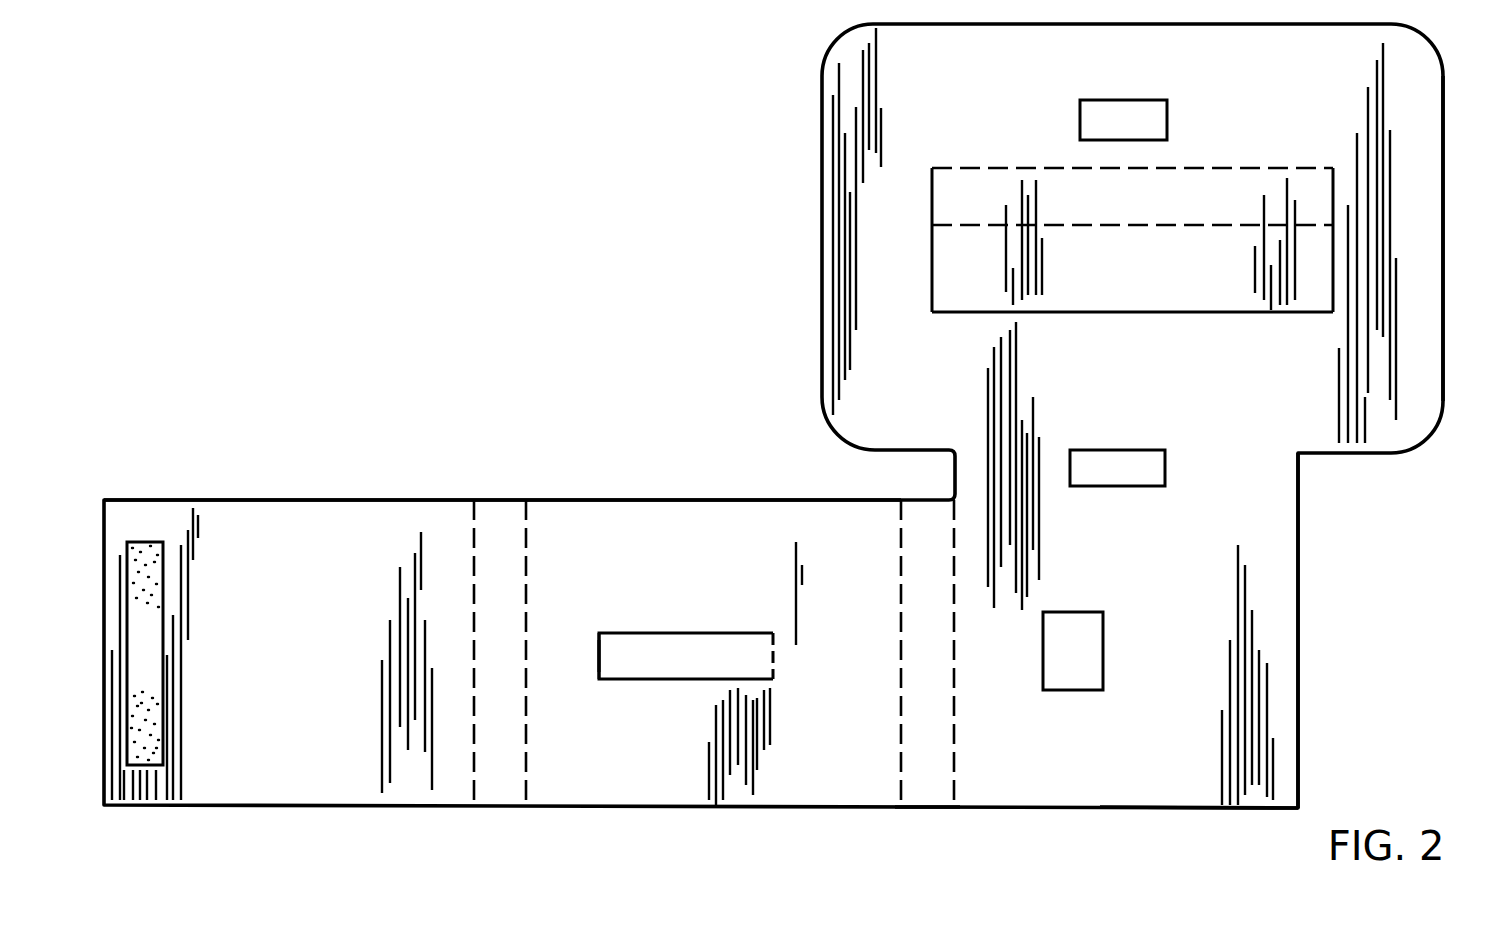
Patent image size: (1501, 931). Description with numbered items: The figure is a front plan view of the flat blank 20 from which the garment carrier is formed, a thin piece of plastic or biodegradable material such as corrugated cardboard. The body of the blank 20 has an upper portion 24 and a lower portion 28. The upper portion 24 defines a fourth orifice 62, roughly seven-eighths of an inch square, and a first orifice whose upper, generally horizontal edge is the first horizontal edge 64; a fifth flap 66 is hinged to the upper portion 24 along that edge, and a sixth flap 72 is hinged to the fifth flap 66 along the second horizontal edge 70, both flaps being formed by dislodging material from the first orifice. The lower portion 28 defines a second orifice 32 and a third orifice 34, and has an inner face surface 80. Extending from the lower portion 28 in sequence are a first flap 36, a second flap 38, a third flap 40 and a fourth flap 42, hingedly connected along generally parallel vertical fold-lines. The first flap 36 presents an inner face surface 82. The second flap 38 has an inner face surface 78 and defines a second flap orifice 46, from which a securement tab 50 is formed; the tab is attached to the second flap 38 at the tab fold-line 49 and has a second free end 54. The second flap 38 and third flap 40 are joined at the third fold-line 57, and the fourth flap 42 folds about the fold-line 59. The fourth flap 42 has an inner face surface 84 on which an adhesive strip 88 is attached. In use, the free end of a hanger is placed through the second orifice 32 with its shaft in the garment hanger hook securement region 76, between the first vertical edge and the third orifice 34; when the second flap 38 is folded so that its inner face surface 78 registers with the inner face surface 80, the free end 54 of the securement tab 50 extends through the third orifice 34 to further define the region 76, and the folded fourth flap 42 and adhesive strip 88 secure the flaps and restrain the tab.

The blank 20 is at (696, 419).
The upper portion 24 is at (1420, 211).
The lower portion 28 is at (1277, 612).
The second orifice 32 is at (1128, 460).
The third orifice 34 is at (1059, 665).
The first flap 36 is at (925, 787).
The second flap 38 is at (717, 525).
The third flap 40 is at (505, 515).
The fourth flap 42 is at (287, 520).
The second flap orifice 46 is at (665, 680).
The tab fold-line 49 is at (778, 655).
The securement tab 50 is at (668, 650).
The second free end 54 is at (612, 657).
The third fold-line 57 is at (530, 575).
The fold-line 59 is at (473, 640).
The fourth orifice 62 is at (1100, 110).
The first horizontal edge 64 is at (1198, 172).
The fifth flap 66 is at (945, 197).
The second horizontal edge 70 is at (1120, 227).
The sixth flap 72 is at (942, 263).
The garment hanger hook securement region 76 is at (1004, 670).
The inner face surface 78 is at (808, 756).
The inner face surface 80 is at (1123, 745).
The inner face surface 82 is at (911, 746).
The inner face surface 84 is at (264, 720).
The adhesive strip 88 is at (146, 565).